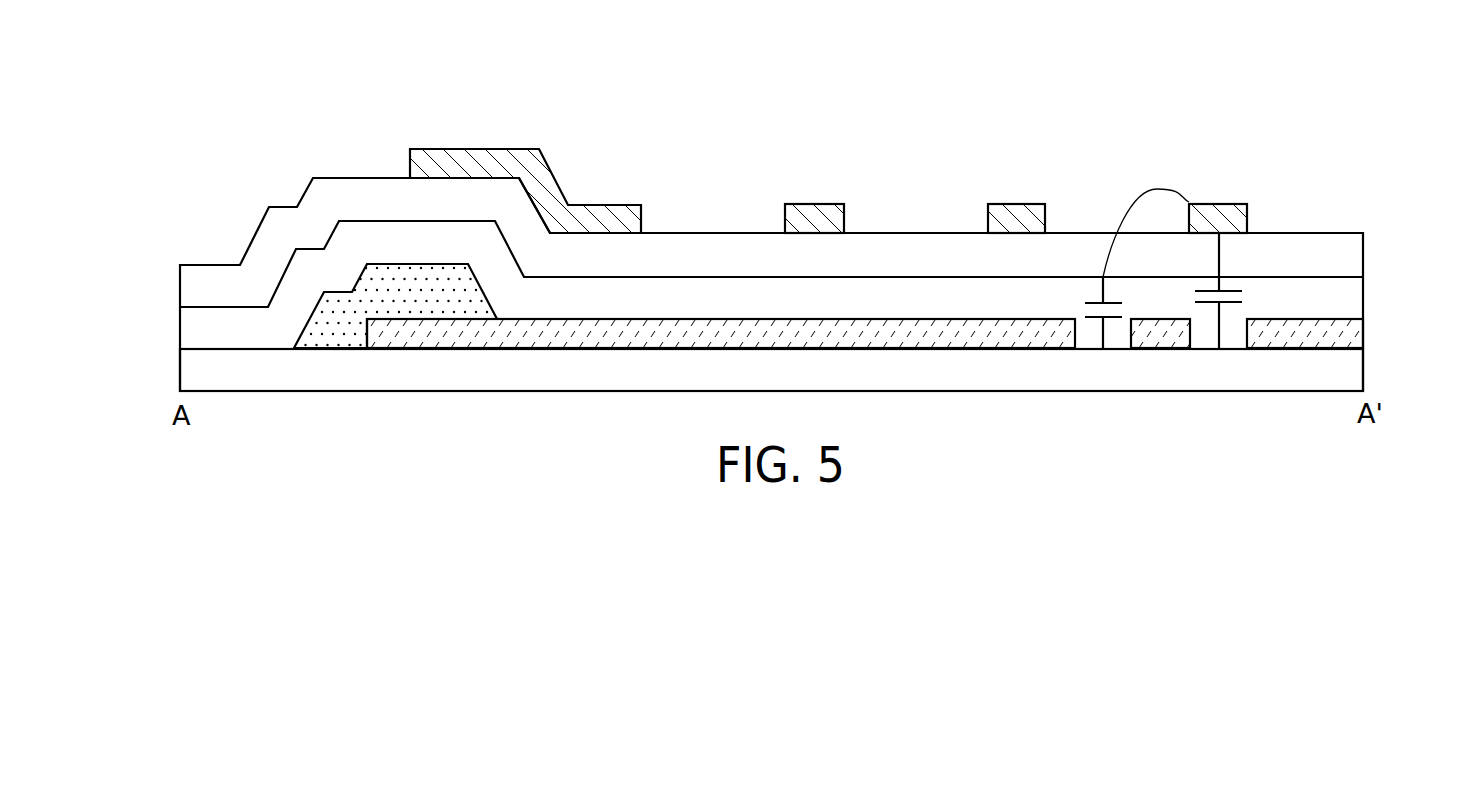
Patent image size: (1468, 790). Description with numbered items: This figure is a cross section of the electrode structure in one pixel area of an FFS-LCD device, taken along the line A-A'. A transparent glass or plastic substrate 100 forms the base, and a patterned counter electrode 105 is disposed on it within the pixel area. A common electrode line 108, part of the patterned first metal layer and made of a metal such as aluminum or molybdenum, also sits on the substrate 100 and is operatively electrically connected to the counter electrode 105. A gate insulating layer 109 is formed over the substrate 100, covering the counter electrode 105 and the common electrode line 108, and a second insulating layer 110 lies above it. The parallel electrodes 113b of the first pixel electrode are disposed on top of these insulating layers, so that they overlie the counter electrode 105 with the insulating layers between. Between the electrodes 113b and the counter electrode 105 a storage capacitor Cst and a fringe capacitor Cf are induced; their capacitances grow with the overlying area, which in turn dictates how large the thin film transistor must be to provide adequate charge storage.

The substrate 100 is at (1350, 368).
The counter electrode 105 is at (1350, 333).
The common electrode line 108 is at (313, 347).
The gate insulating layer 109 is at (1350, 298).
The second insulating layer 110 is at (1350, 254).
The parallel electrode 113b is at (467, 160).
The fringe capacitor Cf is at (1118, 268).
The storage capacitor Cst is at (1240, 290).